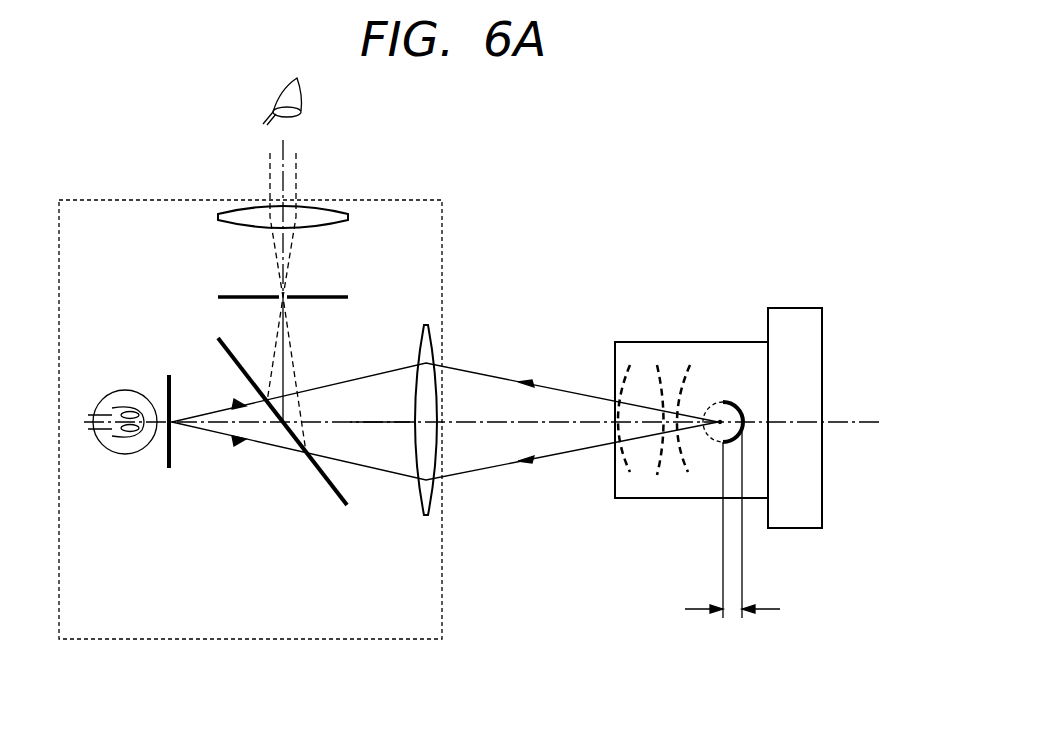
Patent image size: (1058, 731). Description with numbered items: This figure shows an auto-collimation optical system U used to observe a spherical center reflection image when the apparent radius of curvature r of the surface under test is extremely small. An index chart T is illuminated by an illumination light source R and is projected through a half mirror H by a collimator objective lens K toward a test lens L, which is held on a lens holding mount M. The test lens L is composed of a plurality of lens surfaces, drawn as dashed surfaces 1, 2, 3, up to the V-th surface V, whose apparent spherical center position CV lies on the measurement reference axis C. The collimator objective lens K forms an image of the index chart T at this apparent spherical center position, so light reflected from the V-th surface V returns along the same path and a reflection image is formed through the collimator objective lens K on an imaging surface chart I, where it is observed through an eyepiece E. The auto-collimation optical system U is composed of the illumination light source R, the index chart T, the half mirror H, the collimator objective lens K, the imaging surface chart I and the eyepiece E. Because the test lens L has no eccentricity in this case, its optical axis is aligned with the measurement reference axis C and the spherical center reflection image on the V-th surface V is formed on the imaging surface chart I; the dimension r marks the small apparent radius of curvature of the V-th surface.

The auto-collimation optical system U is at (388, 200).
The eyepiece E is at (218, 218).
The imaging surface chart I is at (218, 296).
The collimator objective lens K is at (426, 325).
The half mirror H is at (300, 478).
The measurement reference axis C is at (383, 425).
The index chart T is at (168, 470).
The illumination light source R is at (113, 453).
The test lens L is at (653, 342).
The first lens surface 1 is at (628, 478).
The second lens surface 2 is at (658, 478).
The third lens surface 3 is at (688, 476).
The V-th surface V is at (735, 402).
The center of vertex sphere CV is at (720, 405).
The lens holding mount M is at (803, 308).
The apparent radius of curvature r is at (732, 542).